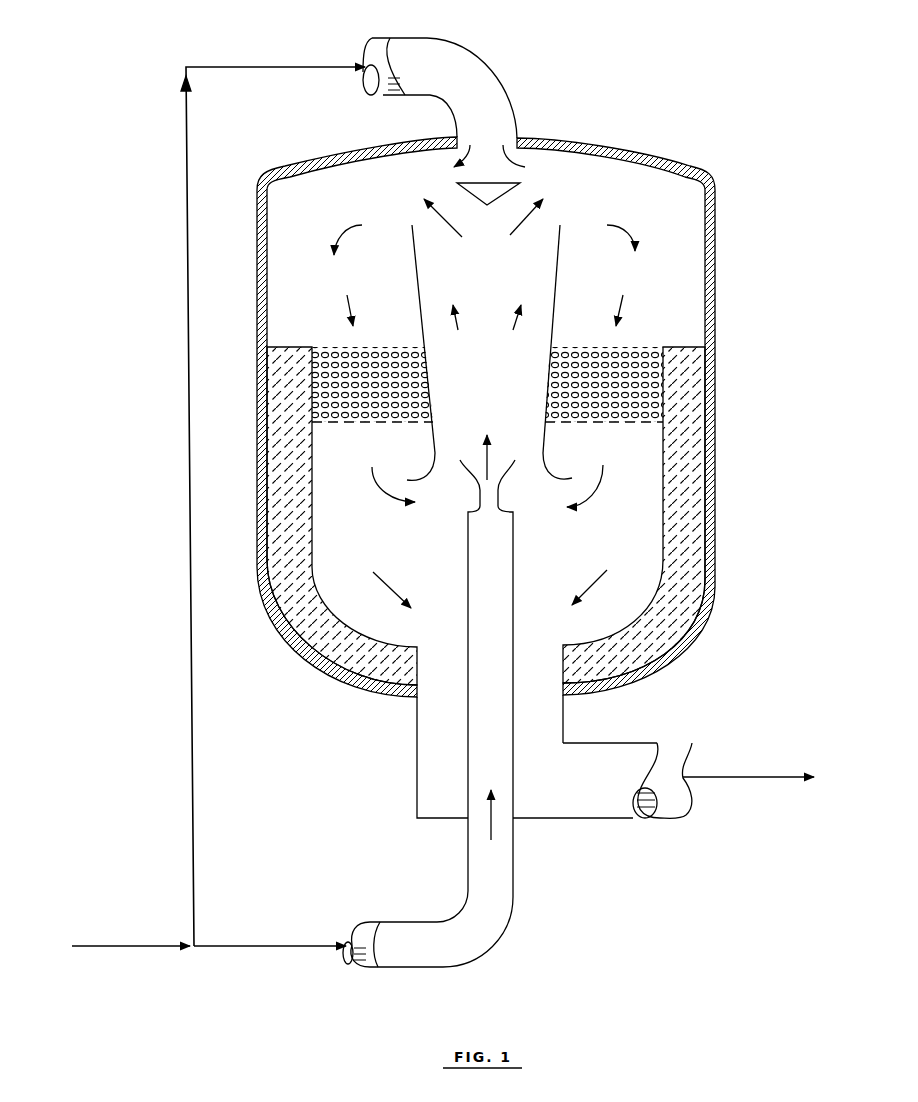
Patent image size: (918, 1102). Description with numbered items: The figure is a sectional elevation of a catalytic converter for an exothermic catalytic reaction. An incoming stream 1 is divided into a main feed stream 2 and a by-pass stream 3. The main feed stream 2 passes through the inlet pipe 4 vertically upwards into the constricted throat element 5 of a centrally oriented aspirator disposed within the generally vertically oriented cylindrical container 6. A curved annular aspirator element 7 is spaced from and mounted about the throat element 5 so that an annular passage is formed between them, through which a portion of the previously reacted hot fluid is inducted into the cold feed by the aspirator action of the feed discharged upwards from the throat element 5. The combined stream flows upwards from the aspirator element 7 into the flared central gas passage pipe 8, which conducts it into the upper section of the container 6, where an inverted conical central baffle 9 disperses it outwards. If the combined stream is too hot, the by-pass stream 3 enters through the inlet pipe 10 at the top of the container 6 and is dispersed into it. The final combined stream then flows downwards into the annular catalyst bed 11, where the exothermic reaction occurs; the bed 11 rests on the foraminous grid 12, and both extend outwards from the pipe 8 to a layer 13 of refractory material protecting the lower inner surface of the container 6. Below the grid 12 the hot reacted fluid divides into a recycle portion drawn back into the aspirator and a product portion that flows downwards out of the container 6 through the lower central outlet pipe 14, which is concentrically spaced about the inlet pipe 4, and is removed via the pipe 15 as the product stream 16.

The stream 1 is at (135, 946).
The main feed stream 2 is at (250, 946).
The by-pass stream 3 is at (196, 922).
The inlet pipe 4 is at (398, 970).
The constricted throat element 5 is at (505, 465).
The container 6 is at (257, 258).
The curved annular aspirator element 7 is at (433, 452).
The central gas passage pipe 8 is at (418, 266).
The inverted conical central baffle 9 is at (508, 197).
The inlet pipe 10 is at (462, 38).
The annular catalyst bed 11 is at (396, 348).
The foraminous grid 12 is at (378, 425).
The layer of refractory material 13 is at (305, 348).
The lower central outlet pipe 14 is at (565, 722).
The pipe 15 is at (658, 818).
The stream 16 is at (745, 775).